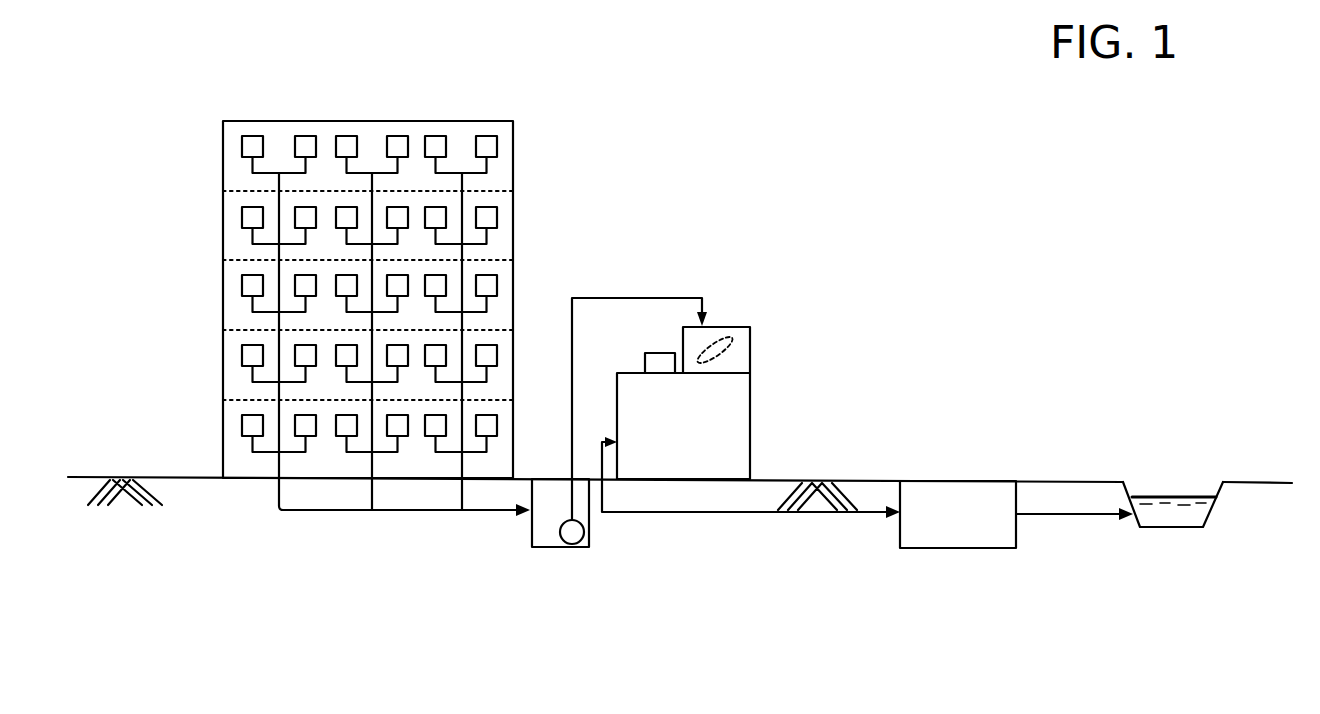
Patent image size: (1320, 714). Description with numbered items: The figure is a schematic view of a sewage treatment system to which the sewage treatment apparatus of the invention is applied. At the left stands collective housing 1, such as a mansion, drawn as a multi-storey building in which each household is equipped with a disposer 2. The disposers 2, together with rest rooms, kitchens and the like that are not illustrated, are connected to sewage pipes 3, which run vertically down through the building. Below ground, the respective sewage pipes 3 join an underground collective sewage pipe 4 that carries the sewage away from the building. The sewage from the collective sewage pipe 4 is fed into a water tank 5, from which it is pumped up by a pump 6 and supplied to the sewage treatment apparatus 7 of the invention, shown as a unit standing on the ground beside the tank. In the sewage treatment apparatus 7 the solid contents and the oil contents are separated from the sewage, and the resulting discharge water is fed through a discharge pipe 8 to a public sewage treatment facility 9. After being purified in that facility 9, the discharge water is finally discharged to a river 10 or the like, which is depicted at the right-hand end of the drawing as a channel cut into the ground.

The collective housing 1 is at (550, 124).
The disposers 2 is at (345, 141).
The sewage pipes 3 is at (463, 270).
The underground collective sewage pipe 4 is at (402, 512).
The water tank 5 is at (528, 527).
The pump 6 is at (560, 548).
The sewage treatment apparatus 7 is at (772, 344).
The discharge pipe 8 is at (803, 515).
The public sewage treatment facility 9 is at (1018, 537).
The river 10 is at (1194, 476).